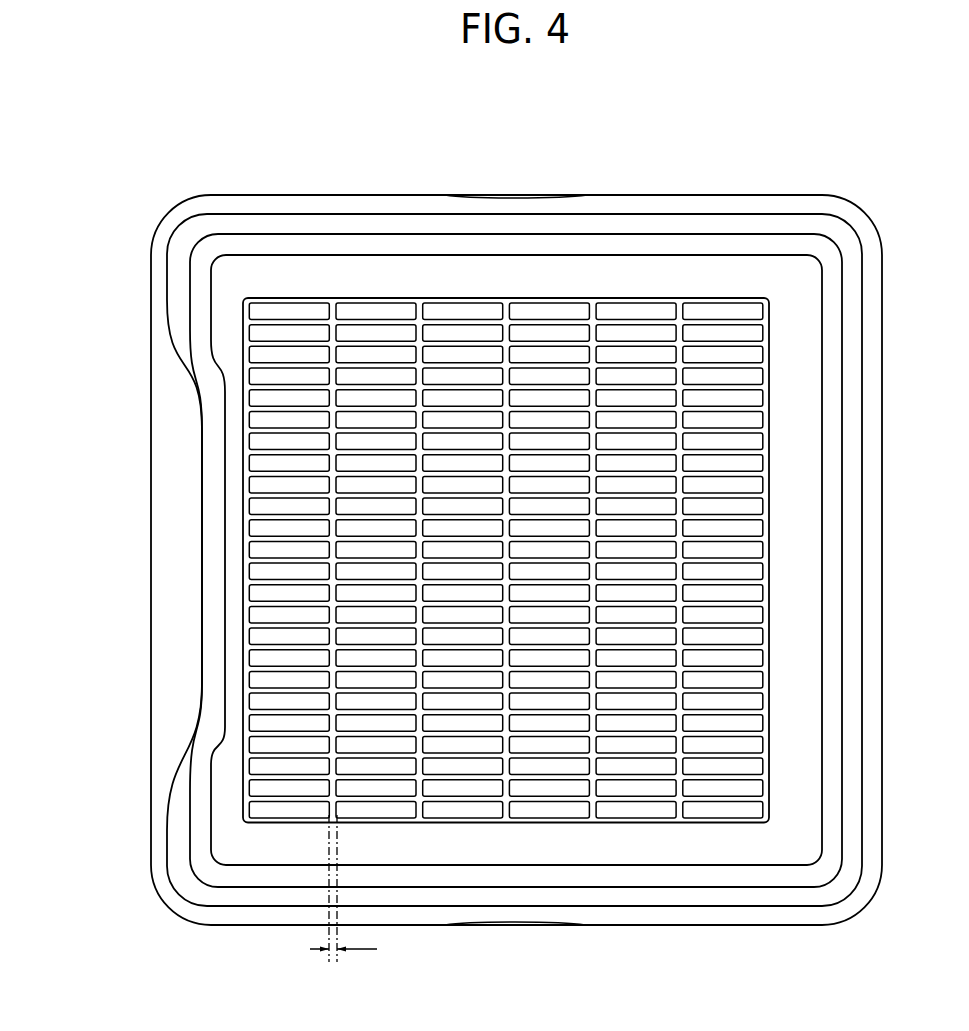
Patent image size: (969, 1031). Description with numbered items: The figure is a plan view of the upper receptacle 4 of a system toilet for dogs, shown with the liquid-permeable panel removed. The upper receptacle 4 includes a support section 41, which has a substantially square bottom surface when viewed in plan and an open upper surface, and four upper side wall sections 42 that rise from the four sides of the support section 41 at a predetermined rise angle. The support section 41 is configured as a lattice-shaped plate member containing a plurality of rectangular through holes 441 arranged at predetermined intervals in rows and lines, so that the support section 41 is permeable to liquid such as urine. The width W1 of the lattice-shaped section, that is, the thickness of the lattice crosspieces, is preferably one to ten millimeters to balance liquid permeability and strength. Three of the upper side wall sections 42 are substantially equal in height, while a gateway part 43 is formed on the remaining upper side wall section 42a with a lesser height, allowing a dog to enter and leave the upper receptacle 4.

The upper receptacle 4 is at (760, 162).
The support section 41 is at (705, 299).
The upper side wall sections 42 is at (342, 248).
The upper side wall section 42a is at (163, 821).
The gateway part 43 is at (203, 517).
The through holes 441 is at (658, 807).
The width of the lattice-shaped section W1 is at (343, 903).